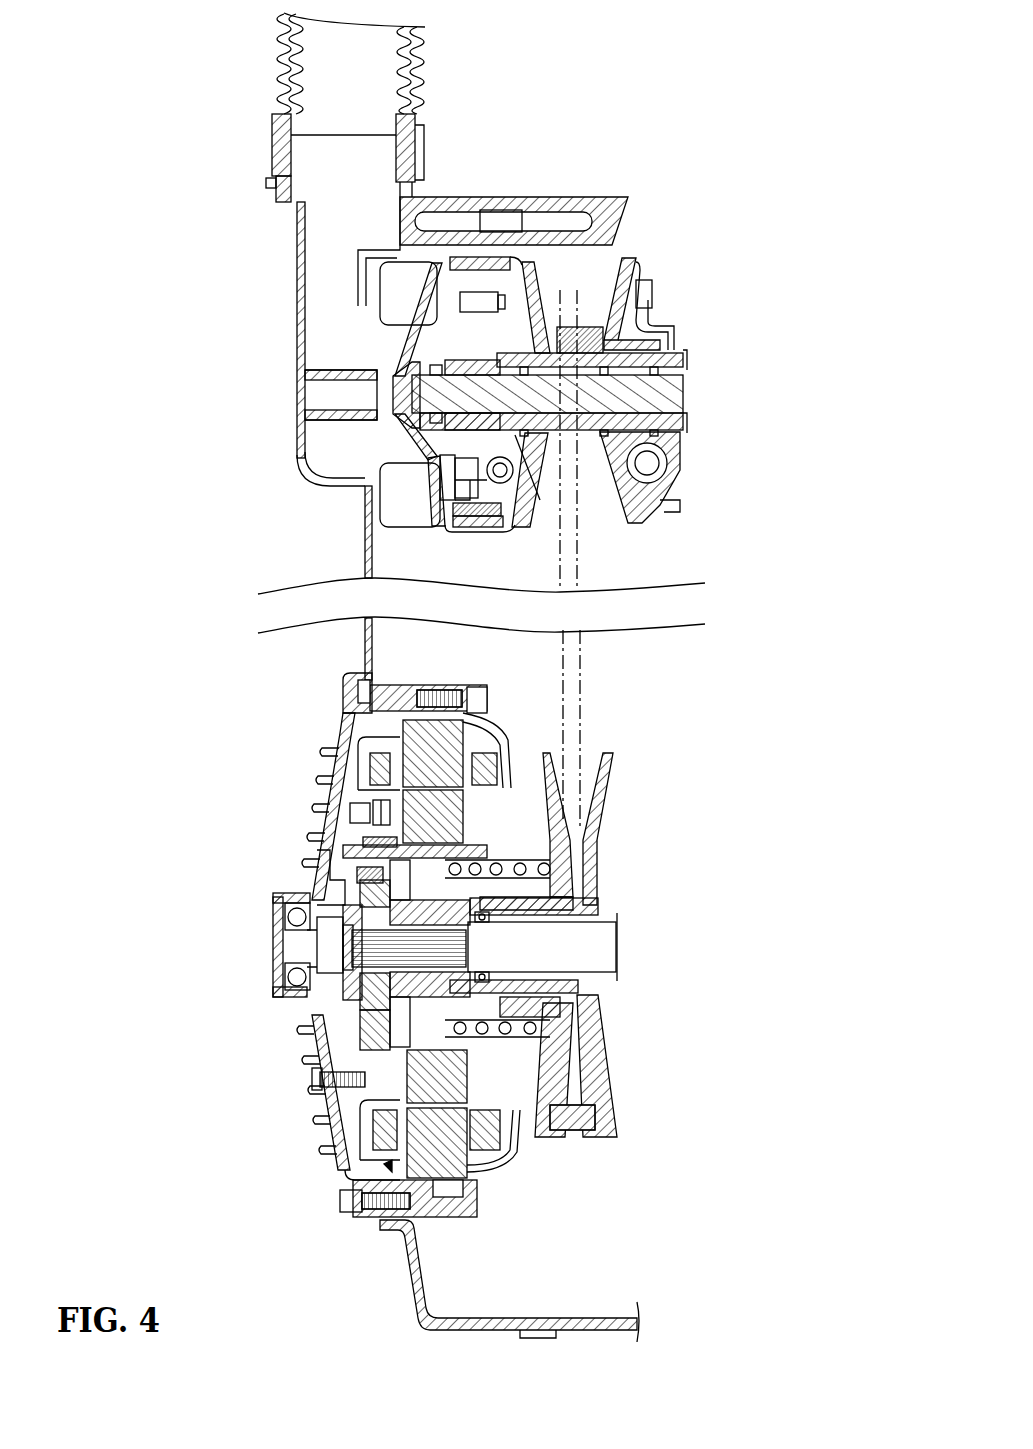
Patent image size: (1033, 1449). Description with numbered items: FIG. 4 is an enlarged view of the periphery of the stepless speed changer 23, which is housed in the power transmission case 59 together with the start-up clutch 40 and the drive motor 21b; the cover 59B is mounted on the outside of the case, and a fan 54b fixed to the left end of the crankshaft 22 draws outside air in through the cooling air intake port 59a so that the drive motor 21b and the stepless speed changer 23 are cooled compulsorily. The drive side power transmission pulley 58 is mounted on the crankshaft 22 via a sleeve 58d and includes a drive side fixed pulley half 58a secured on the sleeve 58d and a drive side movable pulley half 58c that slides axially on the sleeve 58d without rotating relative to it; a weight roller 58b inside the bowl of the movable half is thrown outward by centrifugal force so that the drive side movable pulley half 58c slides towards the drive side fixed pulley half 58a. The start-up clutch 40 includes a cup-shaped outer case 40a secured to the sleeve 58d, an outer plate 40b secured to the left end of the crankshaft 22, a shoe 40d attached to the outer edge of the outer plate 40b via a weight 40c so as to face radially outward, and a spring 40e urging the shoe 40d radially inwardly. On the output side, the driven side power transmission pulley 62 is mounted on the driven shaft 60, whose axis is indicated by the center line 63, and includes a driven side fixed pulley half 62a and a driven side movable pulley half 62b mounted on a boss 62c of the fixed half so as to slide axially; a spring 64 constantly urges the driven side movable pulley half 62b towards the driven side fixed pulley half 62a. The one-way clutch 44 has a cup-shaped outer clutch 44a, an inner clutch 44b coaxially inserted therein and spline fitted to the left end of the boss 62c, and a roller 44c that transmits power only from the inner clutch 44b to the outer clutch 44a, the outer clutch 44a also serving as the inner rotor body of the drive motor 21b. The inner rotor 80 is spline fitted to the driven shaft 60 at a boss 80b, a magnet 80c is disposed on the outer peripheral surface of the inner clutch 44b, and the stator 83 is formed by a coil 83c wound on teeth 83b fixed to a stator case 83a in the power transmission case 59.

The power transmission case 59 is at (292, 442).
The cooling air intake port 59a is at (343, 150).
The fan 54b is at (400, 495).
The start-up clutch 40 is at (473, 246).
The drive side fixed pulley half 58a is at (545, 290).
The outer plate 40b is at (422, 447).
The weight 40c is at (460, 525).
The shoe 40d is at (483, 525).
The outer case 40a is at (528, 518).
The spring 40e is at (540, 500).
The crankshaft 22 is at (683, 398).
The sleeve 58d is at (683, 372).
The drive side power transmission pulley 58 is at (637, 248).
The drive side movable pulley half 58c is at (633, 262).
The weight roller 58b is at (662, 466).
The stepless speed changer 23 is at (602, 578).
The axis line 63 is at (585, 660).
The driven side power transmission pulley 62 is at (637, 747).
The driven side movable pulley half 62b is at (543, 762).
The driven side fixed pulley half 62a is at (608, 762).
The boss 62c is at (582, 912).
The spring 64 is at (508, 862).
The driven shaft 60 is at (612, 948).
The one-way clutch 44 is at (205, 837).
The outer clutch 44a is at (320, 866).
The roller 44c is at (350, 886).
The inner clutch 44b is at (300, 920).
The inner rotor 80 is at (322, 995).
The boss 80b is at (375, 975).
The magnet 80c is at (465, 1073).
The coil 83c is at (512, 1135).
The cover 59B is at (340, 1110).
The drive motor 21b is at (350, 1161).
The stator 83 is at (388, 1224).
The stator case 83a is at (468, 1217).
The teeth 83b is at (415, 1250).